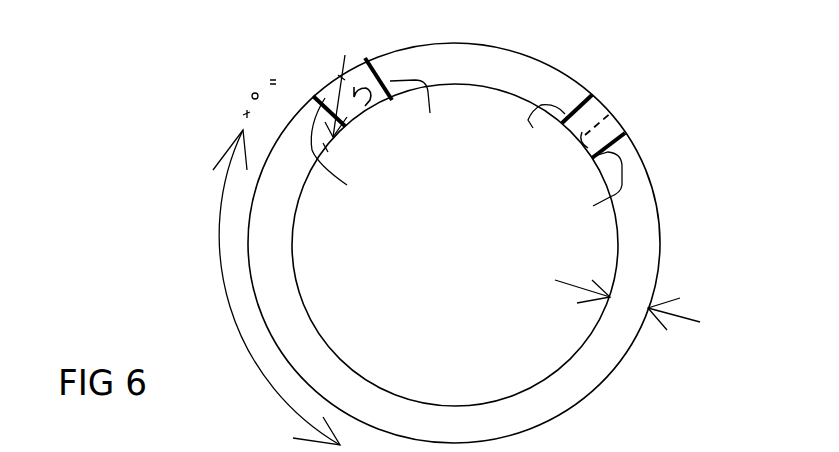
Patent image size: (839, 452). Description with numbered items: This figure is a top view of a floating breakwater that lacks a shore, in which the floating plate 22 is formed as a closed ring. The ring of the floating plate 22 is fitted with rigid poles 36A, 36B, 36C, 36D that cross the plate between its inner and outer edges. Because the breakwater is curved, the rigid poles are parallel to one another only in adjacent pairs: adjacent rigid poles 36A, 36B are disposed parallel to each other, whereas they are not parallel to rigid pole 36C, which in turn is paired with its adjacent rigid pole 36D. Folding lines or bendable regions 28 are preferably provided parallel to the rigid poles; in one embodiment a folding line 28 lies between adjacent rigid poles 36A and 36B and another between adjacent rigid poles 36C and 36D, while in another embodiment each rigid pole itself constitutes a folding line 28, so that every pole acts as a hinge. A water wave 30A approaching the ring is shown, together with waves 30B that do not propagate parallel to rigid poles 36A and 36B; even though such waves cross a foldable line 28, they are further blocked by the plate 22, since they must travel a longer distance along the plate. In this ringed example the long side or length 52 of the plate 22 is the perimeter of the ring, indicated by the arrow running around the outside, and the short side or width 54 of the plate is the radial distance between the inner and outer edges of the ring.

The floating plate 22 is at (700, 230).
The folding line/region 28 is at (362, 103).
The water wave 30A is at (343, 28).
The waves not propagating parallel to the rigid poles 30B is at (330, 93).
The rigid pole 36A is at (342, 155).
The rigid pole 36B is at (425, 110).
The rigid pole 36C is at (546, 123).
The rigid pole 36D is at (586, 179).
The long side (length) of the plate 52 is at (212, 317).
The short side (width) of the plate 54 is at (670, 330).